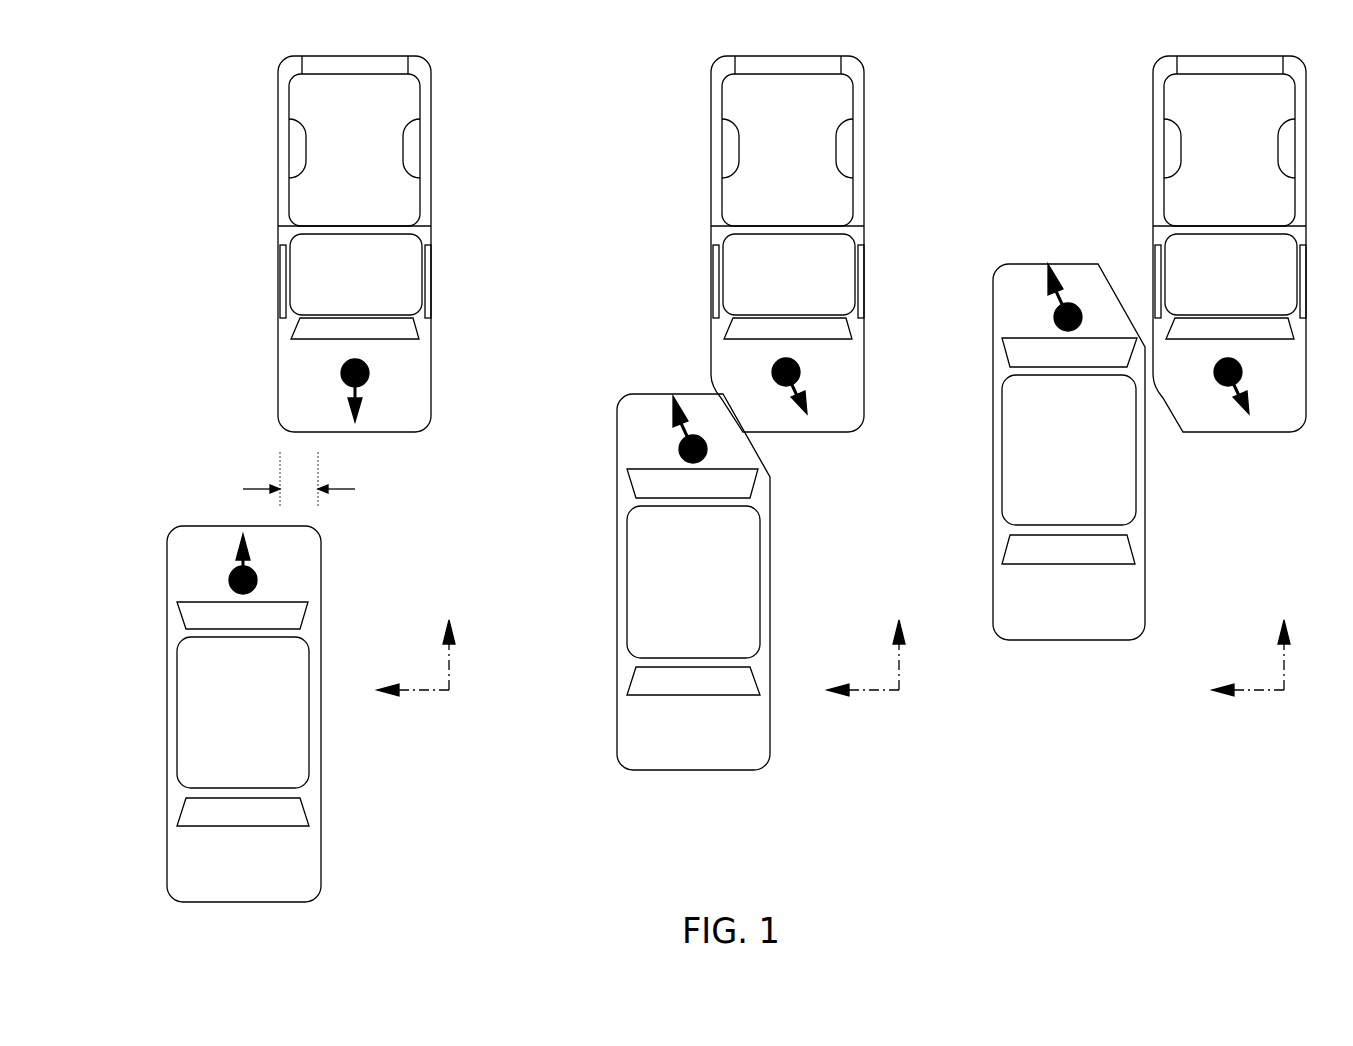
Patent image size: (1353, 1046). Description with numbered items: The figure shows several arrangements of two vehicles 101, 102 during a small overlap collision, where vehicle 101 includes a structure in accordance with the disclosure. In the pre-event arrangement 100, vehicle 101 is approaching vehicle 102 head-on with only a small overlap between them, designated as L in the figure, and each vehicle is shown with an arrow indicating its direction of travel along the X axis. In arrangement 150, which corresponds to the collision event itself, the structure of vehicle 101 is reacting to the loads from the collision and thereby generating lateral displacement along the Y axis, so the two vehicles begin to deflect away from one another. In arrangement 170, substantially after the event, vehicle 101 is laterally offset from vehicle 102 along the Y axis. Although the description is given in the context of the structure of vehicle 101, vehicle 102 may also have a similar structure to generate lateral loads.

The pre-event arrangement 100 is at (134, 171).
The vehicle 101 is at (222, 725).
The vehicle 102 is at (330, 286).
The arrangement during the event 150 is at (565, 171).
The arrangement substantially after the event 170 is at (1004, 171).